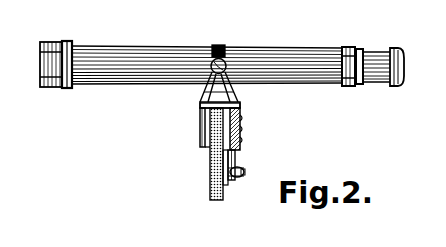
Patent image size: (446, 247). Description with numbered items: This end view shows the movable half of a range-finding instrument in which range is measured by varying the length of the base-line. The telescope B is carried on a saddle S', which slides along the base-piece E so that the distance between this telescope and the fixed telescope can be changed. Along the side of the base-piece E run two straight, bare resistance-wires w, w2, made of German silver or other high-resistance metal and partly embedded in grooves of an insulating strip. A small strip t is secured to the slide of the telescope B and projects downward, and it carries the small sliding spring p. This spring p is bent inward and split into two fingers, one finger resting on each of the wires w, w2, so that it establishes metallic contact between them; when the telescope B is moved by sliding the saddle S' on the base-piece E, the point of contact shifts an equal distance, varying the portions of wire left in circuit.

The telescope B is at (222, 68).
The saddle S' is at (210, 125).
The resistance-wire w is at (241, 143).
The strip t is at (238, 169).
The base-piece E is at (210, 181).
The sliding spring p is at (232, 178).
The resistance-wire w2 is at (235, 183).